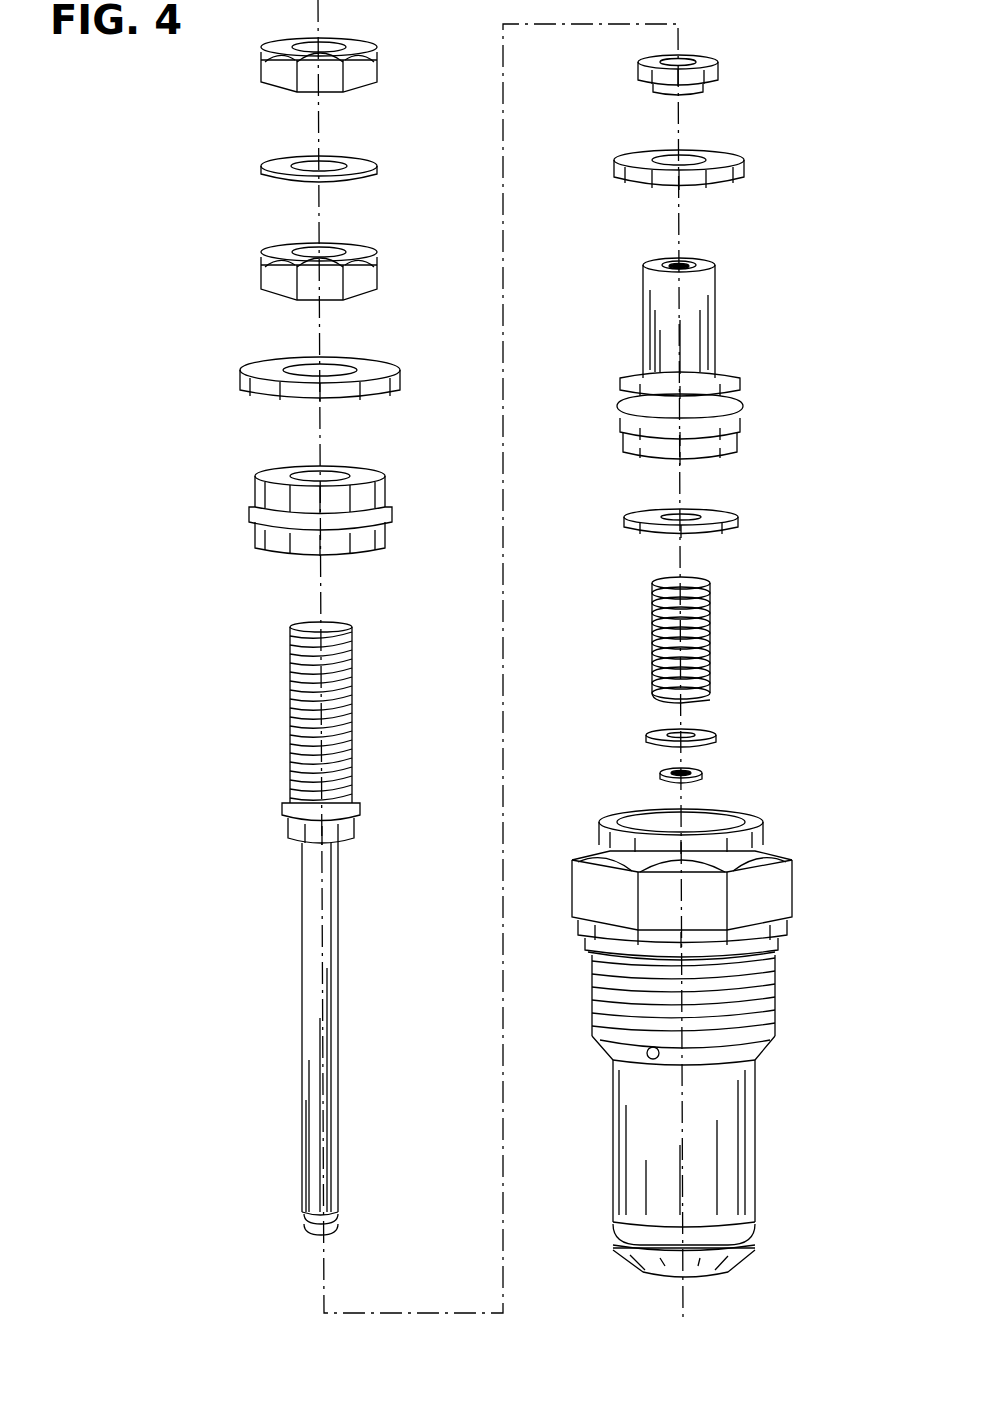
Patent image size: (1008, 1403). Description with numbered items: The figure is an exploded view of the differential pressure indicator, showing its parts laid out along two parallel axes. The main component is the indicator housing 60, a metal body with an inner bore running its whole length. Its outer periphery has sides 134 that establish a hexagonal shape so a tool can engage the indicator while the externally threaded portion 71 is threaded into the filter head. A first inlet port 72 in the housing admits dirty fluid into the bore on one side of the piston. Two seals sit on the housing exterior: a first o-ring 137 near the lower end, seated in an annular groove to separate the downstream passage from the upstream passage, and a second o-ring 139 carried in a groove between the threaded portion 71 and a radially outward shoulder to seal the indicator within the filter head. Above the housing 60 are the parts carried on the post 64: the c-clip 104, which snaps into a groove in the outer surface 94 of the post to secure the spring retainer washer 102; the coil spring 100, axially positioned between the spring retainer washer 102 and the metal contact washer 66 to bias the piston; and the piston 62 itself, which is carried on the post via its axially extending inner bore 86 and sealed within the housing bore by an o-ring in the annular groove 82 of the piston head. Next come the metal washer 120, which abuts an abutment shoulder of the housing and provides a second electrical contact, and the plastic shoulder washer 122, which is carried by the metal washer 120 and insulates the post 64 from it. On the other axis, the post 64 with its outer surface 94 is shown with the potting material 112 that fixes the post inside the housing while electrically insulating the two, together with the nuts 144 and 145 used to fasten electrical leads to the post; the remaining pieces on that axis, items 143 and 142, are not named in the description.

The nut 143 is at (259, 65).
The nut 145 is at (261, 167).
The nut 144 is at (261, 277).
The washer 142 is at (241, 380).
The potting material 112 is at (256, 487).
The post 64 is at (316, 876).
The outer surface of the post 94 is at (302, 930).
The plastic shoulder washer 122 is at (719, 70).
The metal washer 120 is at (745, 170).
The inner bore 86 is at (690, 262).
The piston 62 is at (716, 318).
The annular groove 82 is at (742, 400).
The metal contact washer 66 is at (739, 521).
The coil spring 100 is at (712, 634).
The spring retainer washer 102 is at (717, 736).
The c-clip 104 is at (703, 773).
The sides 134 is at (782, 886).
The second o-ring 139 is at (779, 947).
The externally threaded portion 71 is at (776, 998).
The first inlet port 72 is at (651, 1059).
The indicator housing 60 is at (756, 1103).
The first o-ring 137 is at (756, 1228).